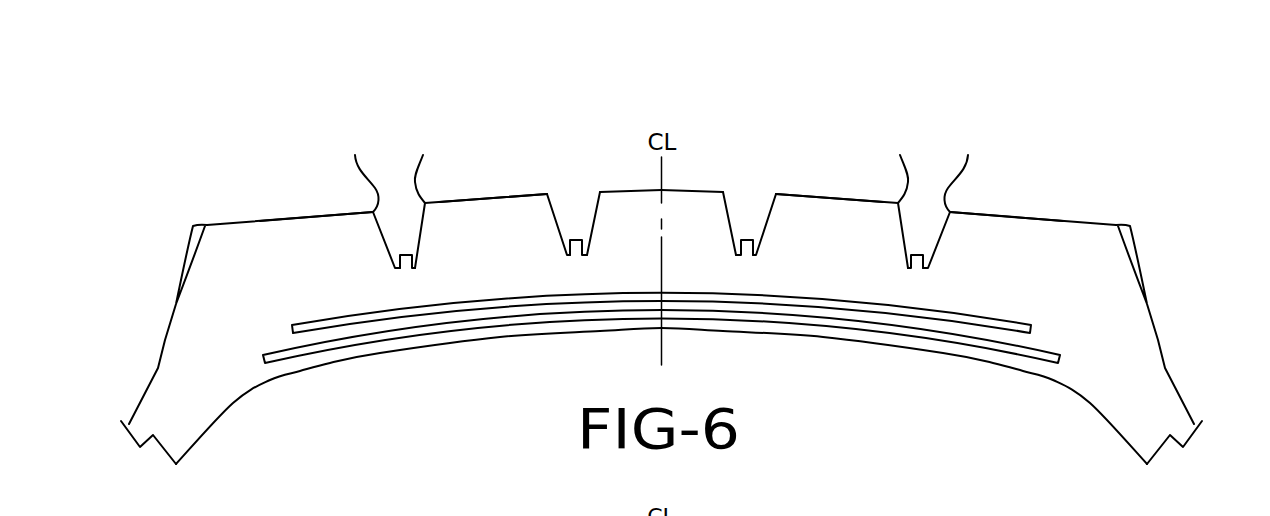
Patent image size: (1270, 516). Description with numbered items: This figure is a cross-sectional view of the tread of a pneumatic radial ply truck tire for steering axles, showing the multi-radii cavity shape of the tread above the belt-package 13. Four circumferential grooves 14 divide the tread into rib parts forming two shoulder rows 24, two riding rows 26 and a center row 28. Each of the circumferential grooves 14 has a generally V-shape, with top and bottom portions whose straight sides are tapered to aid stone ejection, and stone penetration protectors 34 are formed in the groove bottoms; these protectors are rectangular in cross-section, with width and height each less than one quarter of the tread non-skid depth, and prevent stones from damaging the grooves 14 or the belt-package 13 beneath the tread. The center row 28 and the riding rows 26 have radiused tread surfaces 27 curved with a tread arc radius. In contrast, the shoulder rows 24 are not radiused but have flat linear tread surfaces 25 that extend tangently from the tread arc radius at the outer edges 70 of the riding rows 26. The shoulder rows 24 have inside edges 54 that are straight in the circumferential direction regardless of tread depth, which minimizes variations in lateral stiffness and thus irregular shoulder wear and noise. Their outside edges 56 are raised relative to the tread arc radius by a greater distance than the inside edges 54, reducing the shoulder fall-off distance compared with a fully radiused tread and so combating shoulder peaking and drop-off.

The belt-package 13 is at (902, 310).
The circumferential grooves 14 is at (398, 173).
The shoulder rows 24 is at (322, 197).
The flat linear tread surfaces 25 is at (270, 217).
The riding rows 26 is at (503, 177).
The radiused tread surfaces 27 is at (475, 198).
The center row 28 is at (625, 177).
The stone penetration protectors 34 is at (403, 256).
The inside edges 54 is at (663, 171).
The outside edges 56 is at (190, 227).
The outer edges 70 is at (663, 166).